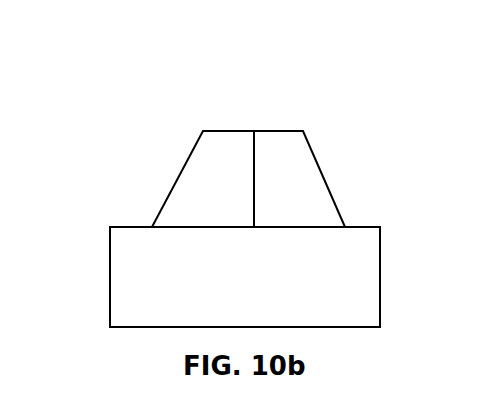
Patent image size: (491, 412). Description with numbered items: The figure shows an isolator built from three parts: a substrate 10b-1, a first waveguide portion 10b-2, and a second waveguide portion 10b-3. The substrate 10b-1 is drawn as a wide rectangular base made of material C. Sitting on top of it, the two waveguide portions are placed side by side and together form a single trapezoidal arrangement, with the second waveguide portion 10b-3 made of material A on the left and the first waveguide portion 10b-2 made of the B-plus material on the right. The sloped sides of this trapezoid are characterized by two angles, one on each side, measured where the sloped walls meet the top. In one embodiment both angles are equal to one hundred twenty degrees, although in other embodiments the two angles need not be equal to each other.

The substrate 10b-1 is at (110, 285).
The first waveguide portion 10b-2 is at (328, 158).
The second waveguide portion 10b-3 is at (172, 173).